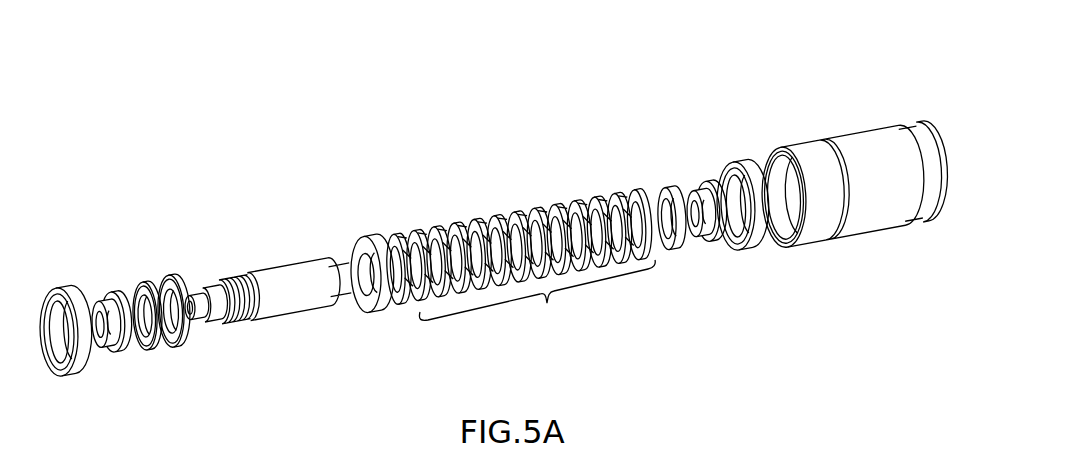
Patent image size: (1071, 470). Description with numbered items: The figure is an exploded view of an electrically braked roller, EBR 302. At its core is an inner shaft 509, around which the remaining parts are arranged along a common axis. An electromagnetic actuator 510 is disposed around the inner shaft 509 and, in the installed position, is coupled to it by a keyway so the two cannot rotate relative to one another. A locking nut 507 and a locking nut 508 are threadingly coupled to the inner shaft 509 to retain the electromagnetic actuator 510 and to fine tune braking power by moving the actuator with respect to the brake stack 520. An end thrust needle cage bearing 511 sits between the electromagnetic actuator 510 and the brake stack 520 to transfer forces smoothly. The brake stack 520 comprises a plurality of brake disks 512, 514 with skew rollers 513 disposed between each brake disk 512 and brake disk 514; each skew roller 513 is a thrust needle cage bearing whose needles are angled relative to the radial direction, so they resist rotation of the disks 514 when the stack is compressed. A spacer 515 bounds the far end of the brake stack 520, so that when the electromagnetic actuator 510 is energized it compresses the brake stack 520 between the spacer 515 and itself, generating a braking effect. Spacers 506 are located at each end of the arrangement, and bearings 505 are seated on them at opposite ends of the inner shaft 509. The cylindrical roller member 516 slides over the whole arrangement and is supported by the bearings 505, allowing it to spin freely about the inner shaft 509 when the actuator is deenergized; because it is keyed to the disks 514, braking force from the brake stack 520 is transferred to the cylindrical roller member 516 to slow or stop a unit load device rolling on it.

The EBR 302 is at (491, 52).
The bearings 505 is at (52, 284).
The spacers 506 is at (103, 290).
The locking nut 507 is at (139, 273).
The locking nut 508 is at (170, 270).
The inner shaft 509 is at (257, 266).
The electromagnetic actuator 510 is at (345, 241).
The end thrust needle cage bearing 511 is at (386, 231).
The brake disk 512 is at (408, 220).
The skew roller 513 is at (428, 219).
The brake disk 514 is at (455, 213).
The spacer 515 is at (666, 181).
The cylindrical roller member 516 is at (825, 134).
The brake stack 520 is at (507, 219).